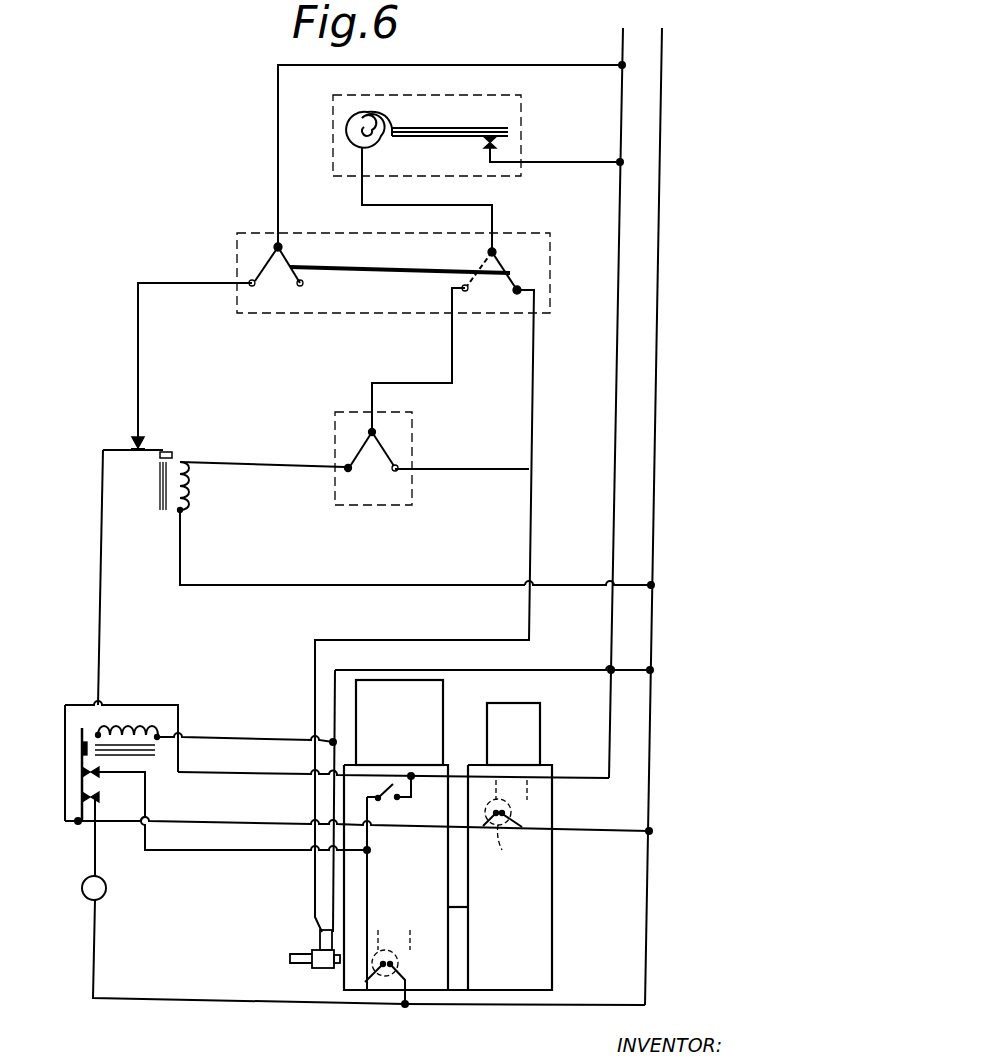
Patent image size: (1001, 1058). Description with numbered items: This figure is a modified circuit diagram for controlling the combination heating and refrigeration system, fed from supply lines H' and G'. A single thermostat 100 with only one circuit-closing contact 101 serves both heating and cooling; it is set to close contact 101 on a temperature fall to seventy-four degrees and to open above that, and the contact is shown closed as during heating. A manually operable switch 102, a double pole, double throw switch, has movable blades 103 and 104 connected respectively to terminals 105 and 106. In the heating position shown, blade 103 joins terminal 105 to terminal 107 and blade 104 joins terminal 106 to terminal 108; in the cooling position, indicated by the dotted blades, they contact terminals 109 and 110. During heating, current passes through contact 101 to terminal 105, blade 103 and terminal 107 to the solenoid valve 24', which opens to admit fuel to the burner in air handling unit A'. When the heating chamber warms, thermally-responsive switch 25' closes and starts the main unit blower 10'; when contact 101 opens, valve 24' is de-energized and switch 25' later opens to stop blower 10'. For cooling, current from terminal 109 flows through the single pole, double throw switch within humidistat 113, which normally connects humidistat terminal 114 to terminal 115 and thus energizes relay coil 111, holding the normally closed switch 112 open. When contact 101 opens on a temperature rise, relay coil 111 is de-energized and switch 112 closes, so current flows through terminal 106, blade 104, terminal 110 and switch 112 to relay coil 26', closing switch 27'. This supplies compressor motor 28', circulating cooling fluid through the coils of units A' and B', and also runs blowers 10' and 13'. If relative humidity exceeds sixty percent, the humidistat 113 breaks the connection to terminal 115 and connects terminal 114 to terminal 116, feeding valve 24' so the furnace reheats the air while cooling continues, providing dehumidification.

The thermostat 100 is at (522, 128).
The circuit-closing contact 101 is at (424, 126).
The manually operable switch 102 is at (552, 282).
The movable blade 103 is at (478, 282).
The movable blade 104 is at (250, 276).
The switch terminal 105 is at (497, 252).
The switch terminal 106 is at (283, 247).
The switch terminal 107 is at (521, 290).
The switch terminal 108 is at (303, 285).
The switch terminal 109 is at (460, 288).
The switch terminal 110 is at (247, 286).
The relay coil 111 is at (186, 492).
The relay switch 112 is at (146, 444).
The humidistat 113 is at (413, 448).
The humidistat terminal 114 is at (376, 431).
The humidistat terminal 115 is at (345, 463).
The humidistat terminal 116 is at (398, 472).
The relay coil 26' is at (139, 718).
The relay switch 27' is at (108, 774).
The compressor motor 28' is at (119, 888).
The thermally-responsive switch 25' is at (395, 883).
The blower 13' is at (506, 824).
The solenoid valve 24' is at (301, 946).
The main unit blower 10' is at (391, 954).
The air handling unit A' is at (396, 857).
The cooling unit B' is at (516, 846).
The supply line H' is at (621, 390).
The supply line G' is at (659, 504).